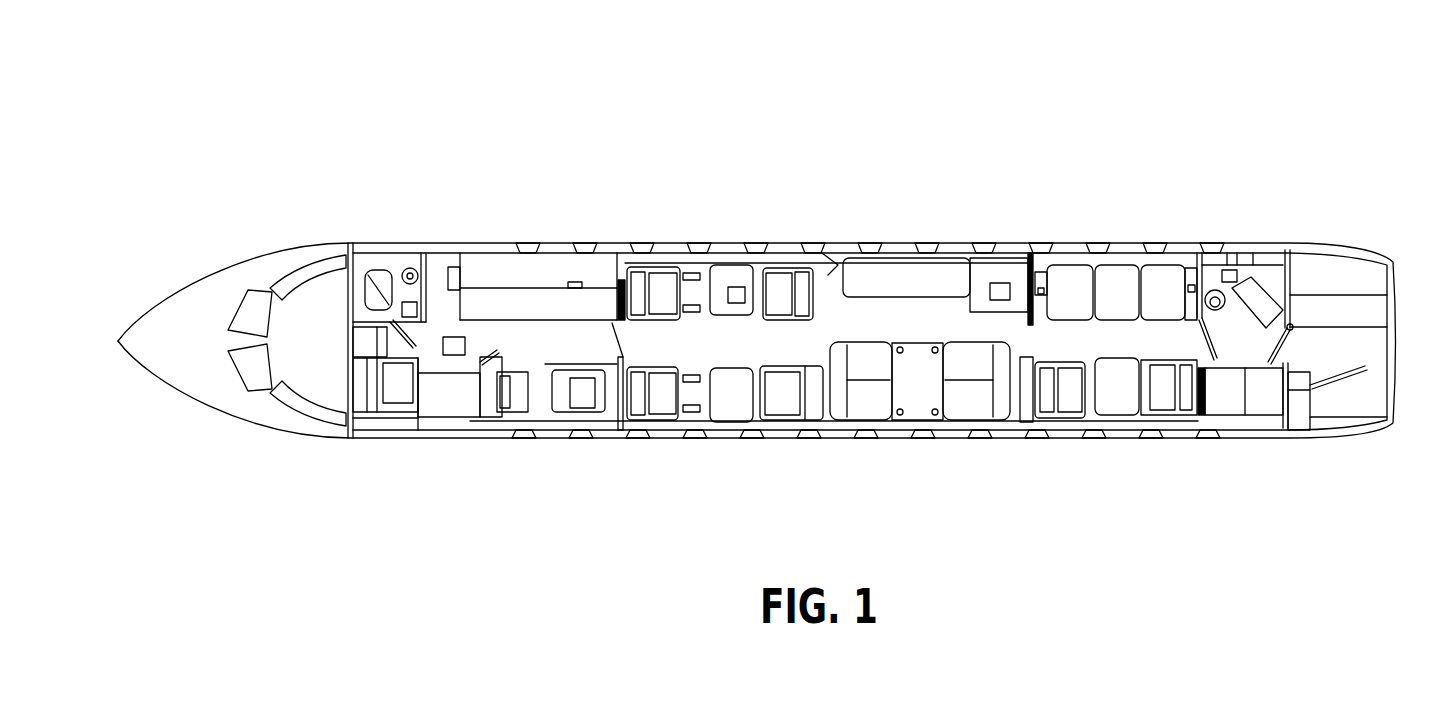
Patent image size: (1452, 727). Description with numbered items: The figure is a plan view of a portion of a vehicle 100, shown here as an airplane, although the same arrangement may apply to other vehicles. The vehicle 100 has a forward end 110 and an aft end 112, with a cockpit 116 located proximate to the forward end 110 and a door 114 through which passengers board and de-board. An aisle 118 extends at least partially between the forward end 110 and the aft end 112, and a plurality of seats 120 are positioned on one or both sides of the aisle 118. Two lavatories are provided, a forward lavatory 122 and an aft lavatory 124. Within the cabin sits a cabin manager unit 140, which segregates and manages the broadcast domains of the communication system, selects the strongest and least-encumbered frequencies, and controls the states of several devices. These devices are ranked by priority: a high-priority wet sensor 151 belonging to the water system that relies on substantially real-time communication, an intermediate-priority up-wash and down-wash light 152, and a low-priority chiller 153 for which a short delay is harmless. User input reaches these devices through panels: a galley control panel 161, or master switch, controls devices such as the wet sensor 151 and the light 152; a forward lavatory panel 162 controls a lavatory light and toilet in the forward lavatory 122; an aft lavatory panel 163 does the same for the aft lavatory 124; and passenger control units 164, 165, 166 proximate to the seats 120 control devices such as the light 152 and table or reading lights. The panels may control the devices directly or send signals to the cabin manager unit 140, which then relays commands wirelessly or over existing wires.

The vehicle 100 is at (311, 106).
The forward end 110 is at (114, 343).
The aft end 112 is at (1393, 329).
The door 114 is at (425, 440).
The cockpit 116 is at (298, 340).
The aisle 118 is at (888, 320).
The seats 120 is at (660, 290).
The forward lavatory 122 is at (396, 210).
The aft lavatory 124 is at (1260, 212).
The cabin manager unit 140 is at (458, 335).
The wet sensor 151 is at (448, 282).
The up-wash and down-wash light 152 is at (826, 262).
The chiller 153 is at (740, 285).
The galley control panel 161 is at (576, 282).
The forward lavatory panel 162 is at (428, 322).
The aft lavatory panel 163 is at (1228, 268).
The passenger control unit 164 is at (1050, 265).
The passenger control unit 165 is at (1190, 285).
The passenger control unit 166 is at (1085, 428).